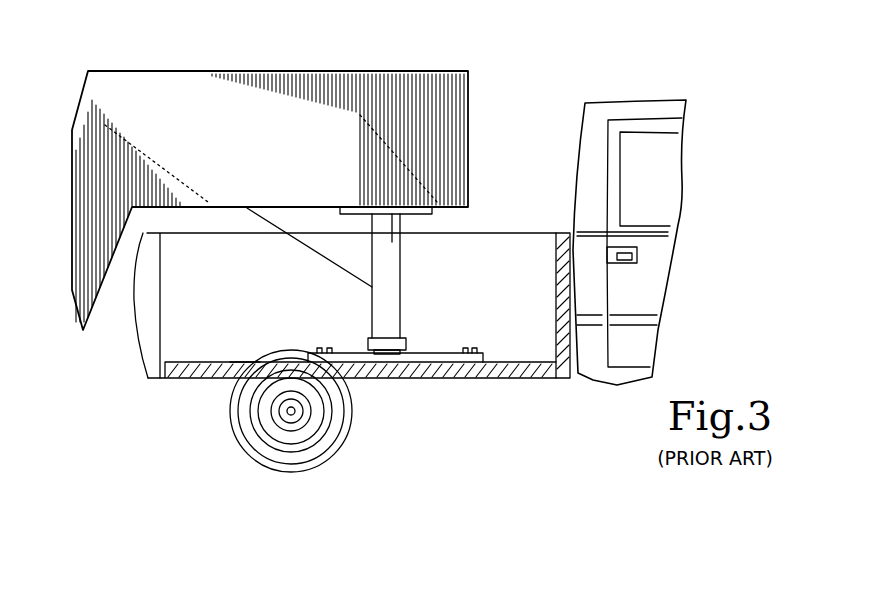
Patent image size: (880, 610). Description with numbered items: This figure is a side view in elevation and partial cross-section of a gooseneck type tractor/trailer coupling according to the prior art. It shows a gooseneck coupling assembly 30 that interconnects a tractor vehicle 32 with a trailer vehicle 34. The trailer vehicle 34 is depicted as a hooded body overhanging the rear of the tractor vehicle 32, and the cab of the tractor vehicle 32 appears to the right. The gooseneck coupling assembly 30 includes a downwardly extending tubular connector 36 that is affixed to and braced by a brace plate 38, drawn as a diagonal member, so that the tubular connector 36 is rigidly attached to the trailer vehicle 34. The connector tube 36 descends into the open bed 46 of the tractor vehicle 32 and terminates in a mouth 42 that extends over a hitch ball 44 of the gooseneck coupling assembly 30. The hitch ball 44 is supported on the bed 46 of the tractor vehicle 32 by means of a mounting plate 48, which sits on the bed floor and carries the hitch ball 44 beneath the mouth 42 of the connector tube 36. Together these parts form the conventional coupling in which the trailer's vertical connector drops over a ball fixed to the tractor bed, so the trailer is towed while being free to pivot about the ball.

The gooseneck coupling assembly 30 is at (437, 277).
The tractor vehicle 32 is at (713, 152).
The trailer vehicle 34 is at (505, 70).
The tubular connector 36 is at (402, 253).
The brace plate 38 is at (332, 243).
The mouth 42 is at (362, 378).
The hitch ball 44 is at (438, 378).
The bed 46 is at (243, 363).
The mounting plate 48 is at (442, 352).